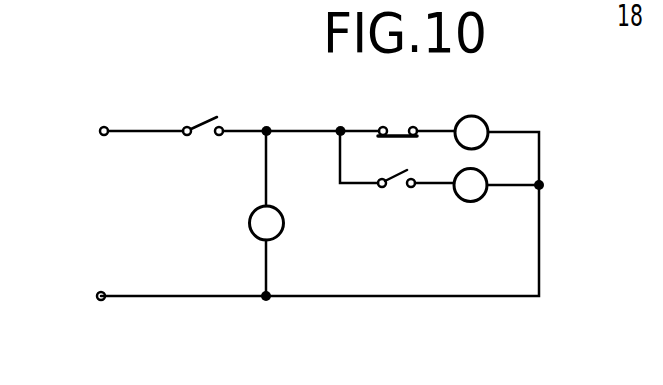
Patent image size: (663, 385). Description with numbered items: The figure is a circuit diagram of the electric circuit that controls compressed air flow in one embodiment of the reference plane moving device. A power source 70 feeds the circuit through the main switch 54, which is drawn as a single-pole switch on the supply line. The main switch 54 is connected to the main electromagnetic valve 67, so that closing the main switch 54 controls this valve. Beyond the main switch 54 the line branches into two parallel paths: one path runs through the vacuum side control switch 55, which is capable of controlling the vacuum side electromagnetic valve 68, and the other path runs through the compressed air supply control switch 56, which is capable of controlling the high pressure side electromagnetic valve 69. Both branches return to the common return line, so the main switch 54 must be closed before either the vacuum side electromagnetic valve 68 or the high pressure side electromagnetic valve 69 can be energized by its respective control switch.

The power source 70 is at (104, 127).
The main switch 54 is at (206, 118).
The vacuum side control switch 55 is at (398, 126).
The compressed air supply control switch 56 is at (393, 190).
The main electromagnetic valve 67 is at (257, 222).
The vacuum side electromagnetic valve 68 is at (480, 128).
The high pressure side electromagnetic valve 69 is at (472, 193).